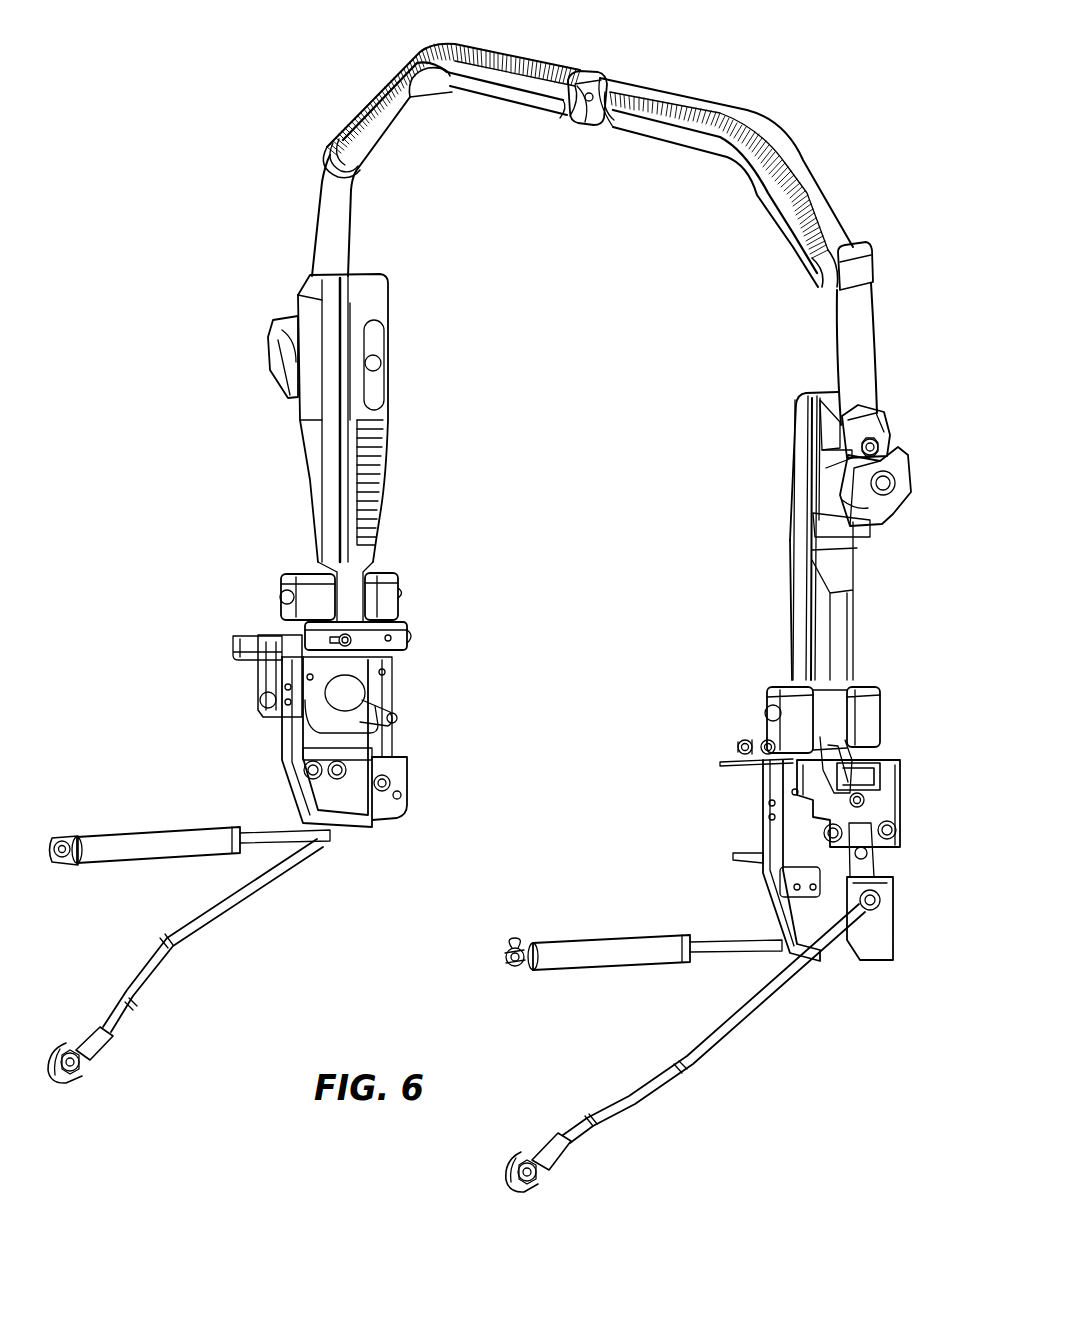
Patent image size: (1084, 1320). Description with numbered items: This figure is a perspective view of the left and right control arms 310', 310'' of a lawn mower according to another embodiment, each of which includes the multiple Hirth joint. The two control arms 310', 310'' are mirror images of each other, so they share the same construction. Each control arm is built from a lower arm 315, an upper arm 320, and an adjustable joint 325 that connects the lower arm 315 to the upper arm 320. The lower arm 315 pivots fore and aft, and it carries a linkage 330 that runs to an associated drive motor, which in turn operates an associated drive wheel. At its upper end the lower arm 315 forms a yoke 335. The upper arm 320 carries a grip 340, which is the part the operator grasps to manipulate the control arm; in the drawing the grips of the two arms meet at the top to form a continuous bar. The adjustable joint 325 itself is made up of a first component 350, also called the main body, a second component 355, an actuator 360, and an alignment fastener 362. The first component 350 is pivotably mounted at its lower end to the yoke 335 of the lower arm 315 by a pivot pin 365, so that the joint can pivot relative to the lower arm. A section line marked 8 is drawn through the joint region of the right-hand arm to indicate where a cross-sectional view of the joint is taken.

The grip 340 is at (775, 138).
The upper arm 320 is at (858, 310).
The left control arm 310' is at (732, 718).
The right control arm 310'' is at (274, 670).
The second component 355 is at (808, 427).
The alignment fastener 362 is at (887, 456).
The actuator 360 is at (883, 512).
The section line 8- 8 is at (740, 456).
The adjustable joint 325 is at (778, 508).
The first component 350 is at (843, 623).
The yoke 335 is at (820, 672).
The pivot pin 365 is at (765, 711).
The lower arm 315 is at (873, 707).
The linkage 330 is at (757, 1003).